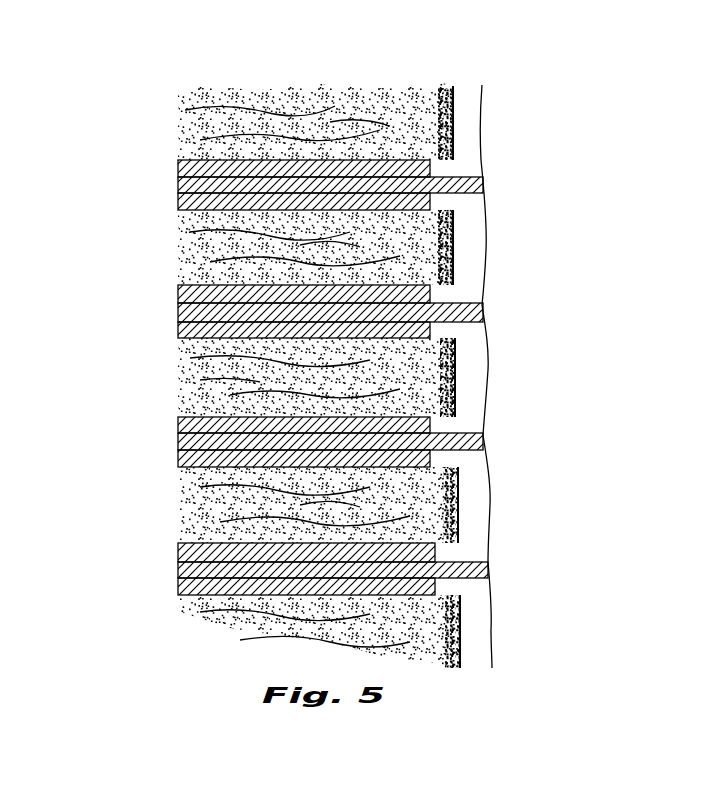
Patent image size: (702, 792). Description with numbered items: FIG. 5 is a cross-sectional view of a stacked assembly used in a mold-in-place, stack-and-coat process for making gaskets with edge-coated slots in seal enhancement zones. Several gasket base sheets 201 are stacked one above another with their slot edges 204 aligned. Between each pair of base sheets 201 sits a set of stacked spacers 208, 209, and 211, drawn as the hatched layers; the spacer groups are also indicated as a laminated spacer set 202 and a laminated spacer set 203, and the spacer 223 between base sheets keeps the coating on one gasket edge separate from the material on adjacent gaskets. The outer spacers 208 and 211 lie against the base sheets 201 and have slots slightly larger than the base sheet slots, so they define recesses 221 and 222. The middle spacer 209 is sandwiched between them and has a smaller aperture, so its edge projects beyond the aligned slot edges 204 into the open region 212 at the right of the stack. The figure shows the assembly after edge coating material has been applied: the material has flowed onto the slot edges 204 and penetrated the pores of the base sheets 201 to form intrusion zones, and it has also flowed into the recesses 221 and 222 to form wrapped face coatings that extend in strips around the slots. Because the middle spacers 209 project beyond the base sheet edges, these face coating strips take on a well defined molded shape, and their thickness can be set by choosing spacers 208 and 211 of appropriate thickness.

The gasket base sheet 201 is at (288, 133).
The laminated separator 202 is at (187, 199).
The laminated separator 203 is at (352, 311).
The slot edge 204 is at (453, 115).
The spacer 208 is at (423, 293).
The spacer 209 is at (482, 312).
The spacer 211 is at (433, 330).
The gap 212 is at (473, 154).
The recess 221 is at (450, 550).
The recess 222 is at (450, 583).
The spacer 223 is at (483, 185).